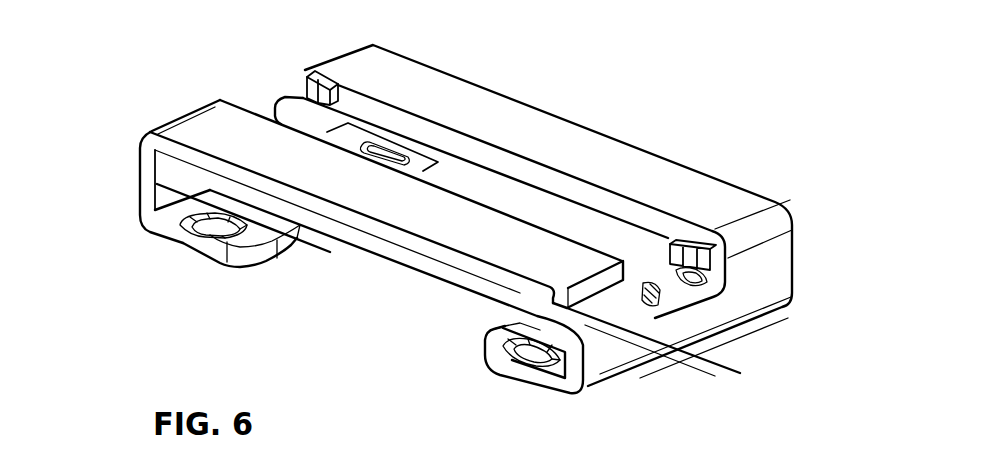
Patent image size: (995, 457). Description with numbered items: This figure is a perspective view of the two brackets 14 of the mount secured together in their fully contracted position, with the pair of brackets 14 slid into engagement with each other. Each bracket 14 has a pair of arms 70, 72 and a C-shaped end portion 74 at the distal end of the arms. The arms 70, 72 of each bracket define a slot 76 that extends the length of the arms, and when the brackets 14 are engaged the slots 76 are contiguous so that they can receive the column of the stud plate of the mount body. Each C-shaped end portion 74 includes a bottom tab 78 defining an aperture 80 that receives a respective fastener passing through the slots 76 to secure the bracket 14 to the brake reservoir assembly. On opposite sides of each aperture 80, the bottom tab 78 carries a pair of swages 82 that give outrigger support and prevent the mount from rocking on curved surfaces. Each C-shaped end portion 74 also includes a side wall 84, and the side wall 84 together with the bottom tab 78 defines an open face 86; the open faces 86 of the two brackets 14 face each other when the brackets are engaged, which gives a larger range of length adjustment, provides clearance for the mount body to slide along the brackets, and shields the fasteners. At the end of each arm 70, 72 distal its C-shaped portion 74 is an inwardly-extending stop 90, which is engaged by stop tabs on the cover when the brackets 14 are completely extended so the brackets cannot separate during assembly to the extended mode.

The bracket 14 is at (201, 118).
The arm 70 is at (513, 187).
The arm 72 is at (740, 187).
The C-shaped end portion 74 is at (167, 117).
The slot 76 is at (387, 133).
The bottom tab 78 is at (260, 258).
The aperture 80 is at (700, 281).
The swage 82 is at (393, 153).
The side wall 84 is at (138, 190).
The open face 86 is at (297, 238).
The inwardly-extending stop 90 is at (312, 72).